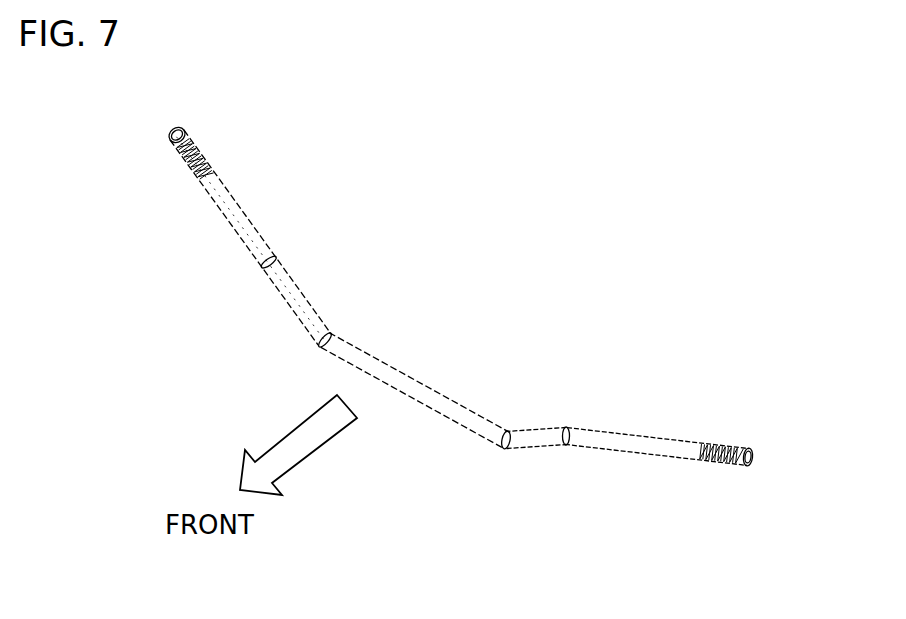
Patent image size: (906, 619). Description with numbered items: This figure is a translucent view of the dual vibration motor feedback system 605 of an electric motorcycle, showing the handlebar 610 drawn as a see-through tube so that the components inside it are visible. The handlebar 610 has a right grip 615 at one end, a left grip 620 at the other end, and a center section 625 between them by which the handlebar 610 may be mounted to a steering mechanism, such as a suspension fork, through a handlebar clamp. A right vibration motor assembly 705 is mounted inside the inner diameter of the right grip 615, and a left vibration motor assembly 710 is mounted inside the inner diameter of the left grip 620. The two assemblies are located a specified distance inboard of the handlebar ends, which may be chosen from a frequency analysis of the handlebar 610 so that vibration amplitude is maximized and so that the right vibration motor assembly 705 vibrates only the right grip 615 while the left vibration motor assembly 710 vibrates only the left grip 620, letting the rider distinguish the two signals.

The dual vibration motor feedback system 605 is at (651, 164).
The handlebar 610 is at (293, 298).
The right grip 615 is at (172, 136).
The left grip 620 is at (742, 463).
The center section 625 is at (431, 388).
The right vibration motor assembly 705 is at (193, 150).
The left vibration motor assembly 710 is at (712, 448).